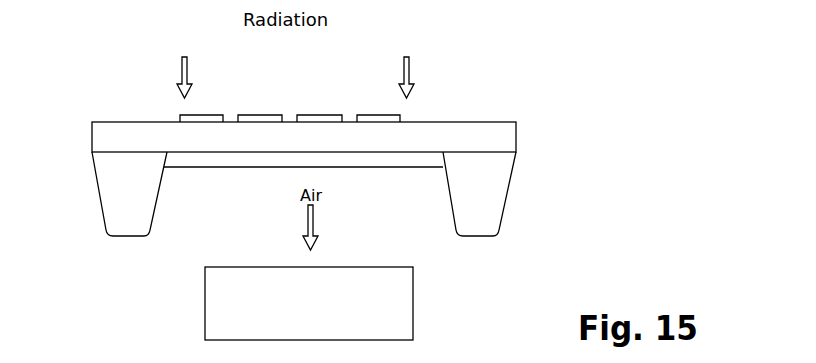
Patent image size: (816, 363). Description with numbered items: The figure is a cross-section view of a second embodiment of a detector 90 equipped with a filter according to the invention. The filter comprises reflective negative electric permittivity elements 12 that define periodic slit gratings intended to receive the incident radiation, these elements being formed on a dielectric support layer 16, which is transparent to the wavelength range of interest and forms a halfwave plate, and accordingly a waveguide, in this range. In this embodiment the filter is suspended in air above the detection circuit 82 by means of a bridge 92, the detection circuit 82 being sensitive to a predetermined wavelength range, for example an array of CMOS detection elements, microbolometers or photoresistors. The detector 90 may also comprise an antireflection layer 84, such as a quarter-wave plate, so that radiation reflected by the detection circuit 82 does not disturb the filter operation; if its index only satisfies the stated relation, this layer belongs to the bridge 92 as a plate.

The detector 90 is at (92, 98).
The reflective negative electric permittivity elements 12 is at (378, 115).
The dielectric support layer 16 is at (517, 138).
The antireflection layer 84 is at (388, 154).
The bridge 92 is at (507, 205).
The detection circuit 82 is at (413, 296).